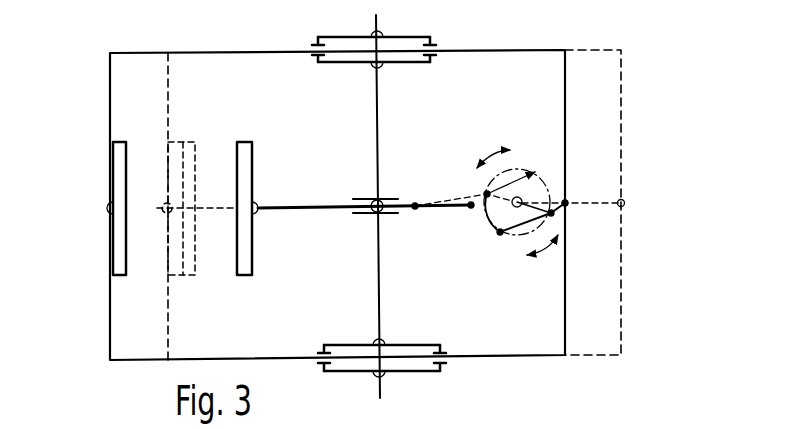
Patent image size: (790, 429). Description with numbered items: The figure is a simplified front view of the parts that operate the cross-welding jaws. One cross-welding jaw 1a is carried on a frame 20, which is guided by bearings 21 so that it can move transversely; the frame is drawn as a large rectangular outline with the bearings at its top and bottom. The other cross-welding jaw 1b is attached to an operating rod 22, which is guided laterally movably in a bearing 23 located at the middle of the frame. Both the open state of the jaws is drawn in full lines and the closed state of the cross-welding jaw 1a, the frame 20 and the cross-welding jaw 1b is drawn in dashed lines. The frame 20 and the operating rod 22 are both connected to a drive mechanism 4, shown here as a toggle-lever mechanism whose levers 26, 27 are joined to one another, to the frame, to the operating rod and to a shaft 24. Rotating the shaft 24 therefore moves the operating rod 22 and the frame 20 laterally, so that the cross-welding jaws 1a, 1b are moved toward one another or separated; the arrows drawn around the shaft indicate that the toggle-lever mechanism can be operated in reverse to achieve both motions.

The frame 20 is at (132, 53).
The cross-welding jaw 1a is at (113, 160).
The cross-welding jaw 1b is at (246, 140).
The bearings 21 is at (414, 37).
The operating rod 22 is at (288, 205).
The bearing 23 is at (388, 198).
The shaft 24 is at (550, 181).
The lever 26 is at (515, 180).
The lever 27 is at (512, 238).
The drive mechanism 4 is at (530, 158).